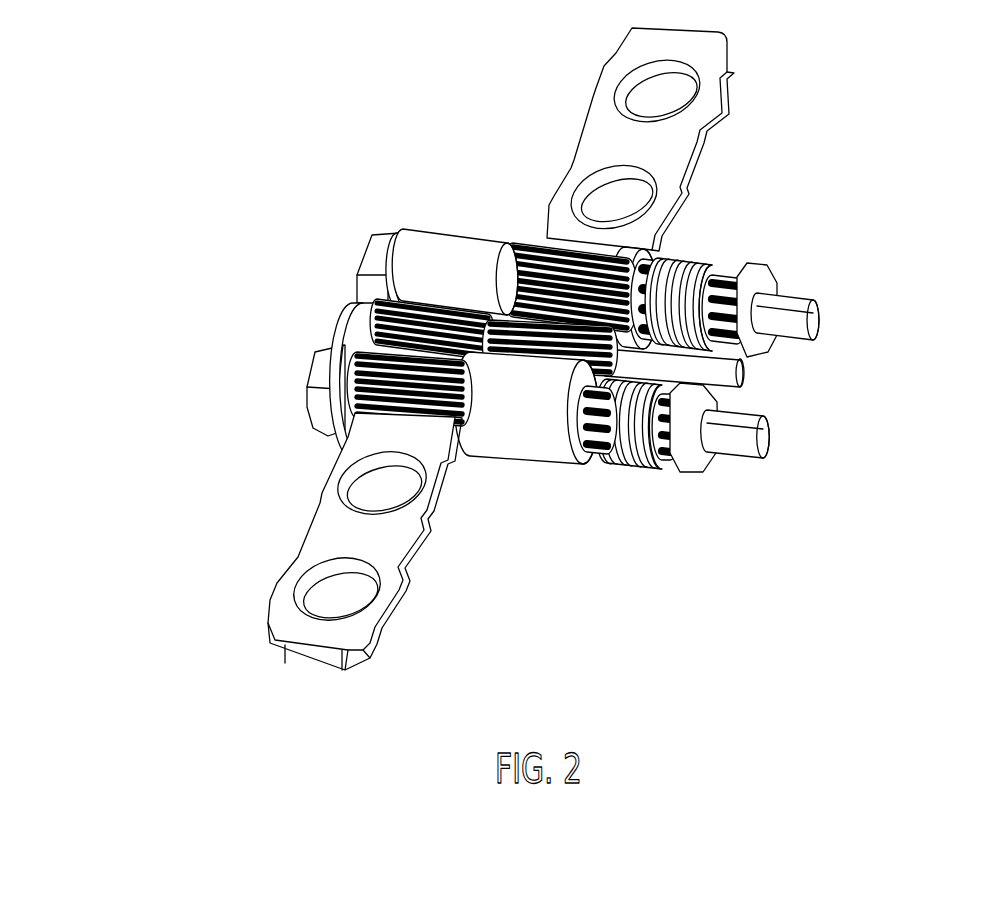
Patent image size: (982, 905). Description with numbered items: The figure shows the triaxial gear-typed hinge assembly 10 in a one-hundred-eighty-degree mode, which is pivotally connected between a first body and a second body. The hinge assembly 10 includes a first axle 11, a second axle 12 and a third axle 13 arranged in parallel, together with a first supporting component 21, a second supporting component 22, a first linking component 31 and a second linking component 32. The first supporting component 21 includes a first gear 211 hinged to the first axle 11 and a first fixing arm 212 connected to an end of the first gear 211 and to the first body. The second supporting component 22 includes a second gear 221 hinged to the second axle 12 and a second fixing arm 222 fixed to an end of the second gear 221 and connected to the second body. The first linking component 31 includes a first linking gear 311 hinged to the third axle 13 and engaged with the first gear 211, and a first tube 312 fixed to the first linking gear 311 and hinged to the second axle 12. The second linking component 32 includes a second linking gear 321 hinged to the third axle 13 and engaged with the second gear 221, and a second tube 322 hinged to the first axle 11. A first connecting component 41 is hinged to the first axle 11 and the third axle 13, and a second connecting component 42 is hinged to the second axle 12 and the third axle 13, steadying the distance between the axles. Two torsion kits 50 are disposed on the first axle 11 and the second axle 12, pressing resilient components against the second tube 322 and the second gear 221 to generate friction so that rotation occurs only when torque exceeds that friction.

The triaxial gear-typed hinge assembly 10 is at (236, 510).
The first axle 11 is at (768, 435).
The second axle 12 is at (815, 322).
The third axle 13 is at (760, 368).
The first supporting component 21 is at (507, 573).
The first gear 211 is at (435, 423).
The first fixing arm 212 is at (340, 630).
The second supporting component 22 is at (455, 90).
The second gear 221 is at (545, 237).
The second fixing arm 222 is at (607, 125).
The first linking component 31 is at (324, 170).
The first linking gear 311 is at (407, 315).
The first tube 312 is at (452, 247).
The second linking component 32 is at (623, 537).
The second linking gear 321 is at (550, 343).
The second tube 322 is at (518, 402).
The first connecting component 41 is at (362, 338).
The second connecting component 42 is at (662, 256).
The torsion kit 50 is at (792, 262).